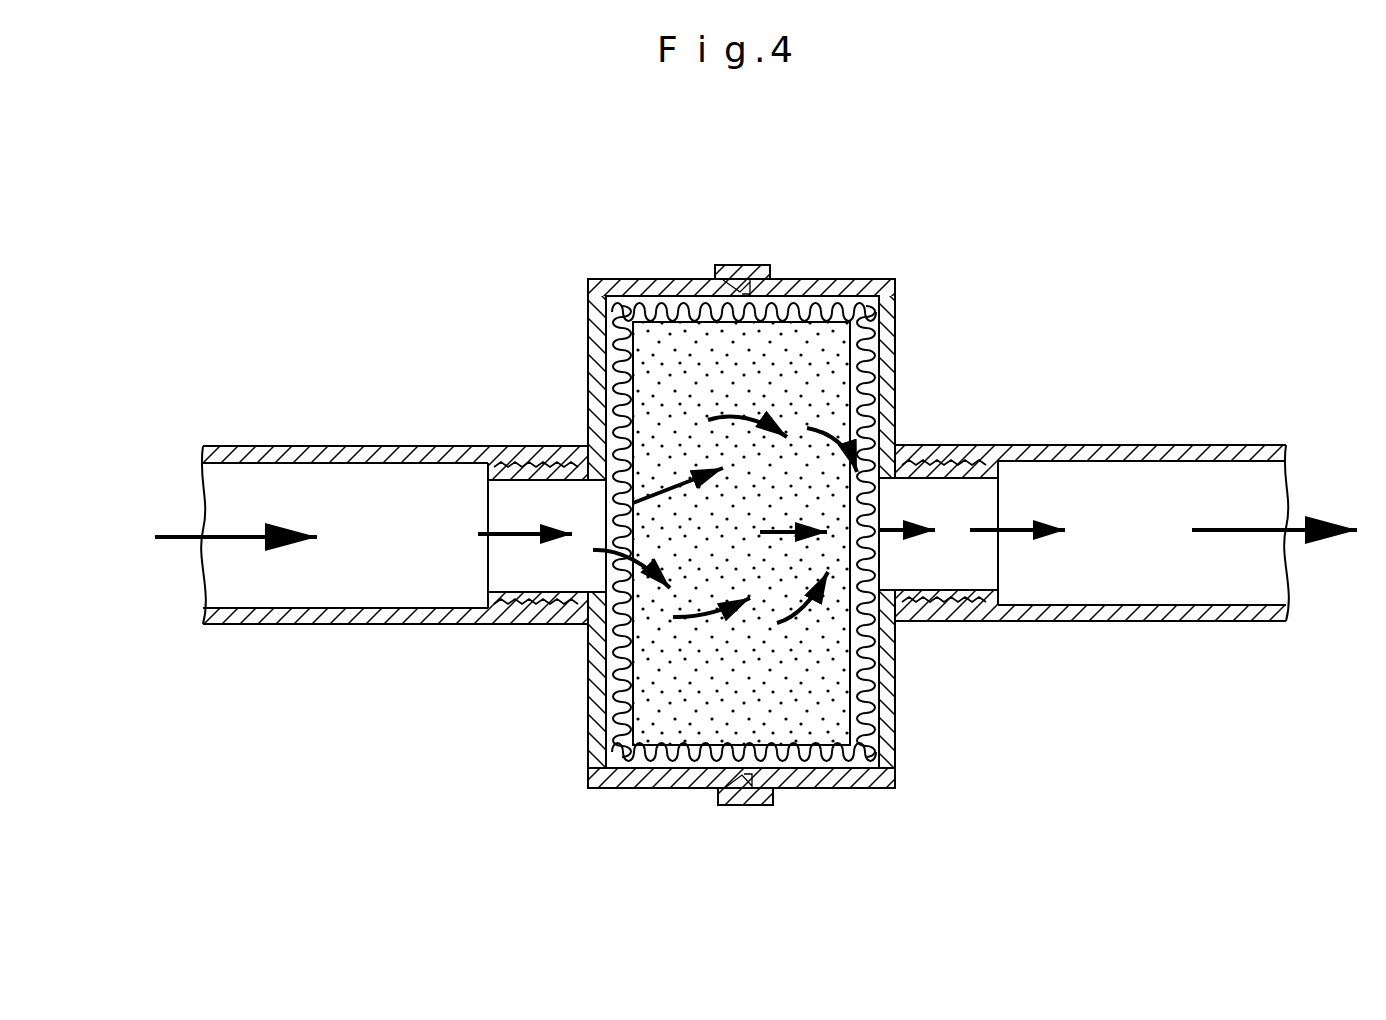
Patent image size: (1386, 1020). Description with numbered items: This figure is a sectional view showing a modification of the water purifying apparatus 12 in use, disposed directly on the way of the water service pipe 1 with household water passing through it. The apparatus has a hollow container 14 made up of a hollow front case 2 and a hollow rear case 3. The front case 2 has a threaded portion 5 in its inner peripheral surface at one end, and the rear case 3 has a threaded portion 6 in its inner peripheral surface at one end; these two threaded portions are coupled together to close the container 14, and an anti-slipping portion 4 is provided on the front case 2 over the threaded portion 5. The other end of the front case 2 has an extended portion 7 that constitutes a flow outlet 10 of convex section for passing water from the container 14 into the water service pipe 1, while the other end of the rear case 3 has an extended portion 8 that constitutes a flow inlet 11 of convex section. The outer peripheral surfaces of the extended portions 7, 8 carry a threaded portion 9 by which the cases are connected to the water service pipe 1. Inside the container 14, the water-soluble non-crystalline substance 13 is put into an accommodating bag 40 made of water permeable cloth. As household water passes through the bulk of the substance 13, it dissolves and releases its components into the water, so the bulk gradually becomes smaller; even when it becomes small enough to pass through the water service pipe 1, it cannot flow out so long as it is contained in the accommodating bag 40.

The water service pipe 1 is at (368, 446).
The front case 2 is at (769, 823).
The rear case 3 is at (665, 790).
The anti-slipping portion 4 is at (757, 268).
The threaded portion 5 is at (714, 237).
The threaded portion 6 is at (737, 313).
The extended portion 7 is at (973, 462).
The extended portion 8 is at (512, 458).
The threaded portion 9 is at (513, 620).
The flow outlet 10 is at (953, 528).
The flow inlet 11 is at (575, 570).
The water purifying apparatus 12 is at (740, 460).
The water-soluble non-crystalline substance 13 is at (847, 330).
The hollow container 14 is at (741, 842).
The accommodating bag 40 is at (860, 727).